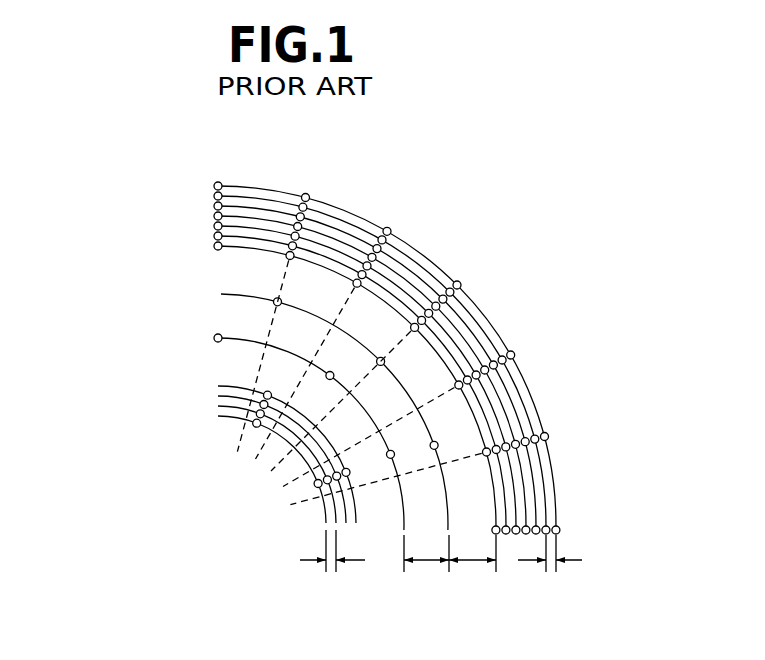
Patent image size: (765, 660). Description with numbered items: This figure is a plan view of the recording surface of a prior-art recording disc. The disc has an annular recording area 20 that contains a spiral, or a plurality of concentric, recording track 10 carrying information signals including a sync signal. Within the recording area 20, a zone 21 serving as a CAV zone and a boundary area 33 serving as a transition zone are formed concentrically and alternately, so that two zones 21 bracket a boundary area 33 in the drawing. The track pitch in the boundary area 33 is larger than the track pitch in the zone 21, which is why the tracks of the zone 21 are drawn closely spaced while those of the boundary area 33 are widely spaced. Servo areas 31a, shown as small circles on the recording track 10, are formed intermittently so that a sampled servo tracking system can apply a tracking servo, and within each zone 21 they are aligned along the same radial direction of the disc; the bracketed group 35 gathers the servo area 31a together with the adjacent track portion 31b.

The recording track 10 is at (562, 390).
The annular recording area 20 is at (150, 180).
The zone 21 is at (203, 187).
The boundary area 33 is at (203, 278).
The servo area 31a is at (461, 283).
The arc line 31b is at (494, 326).
The line/node group 35 is at (567, 214).